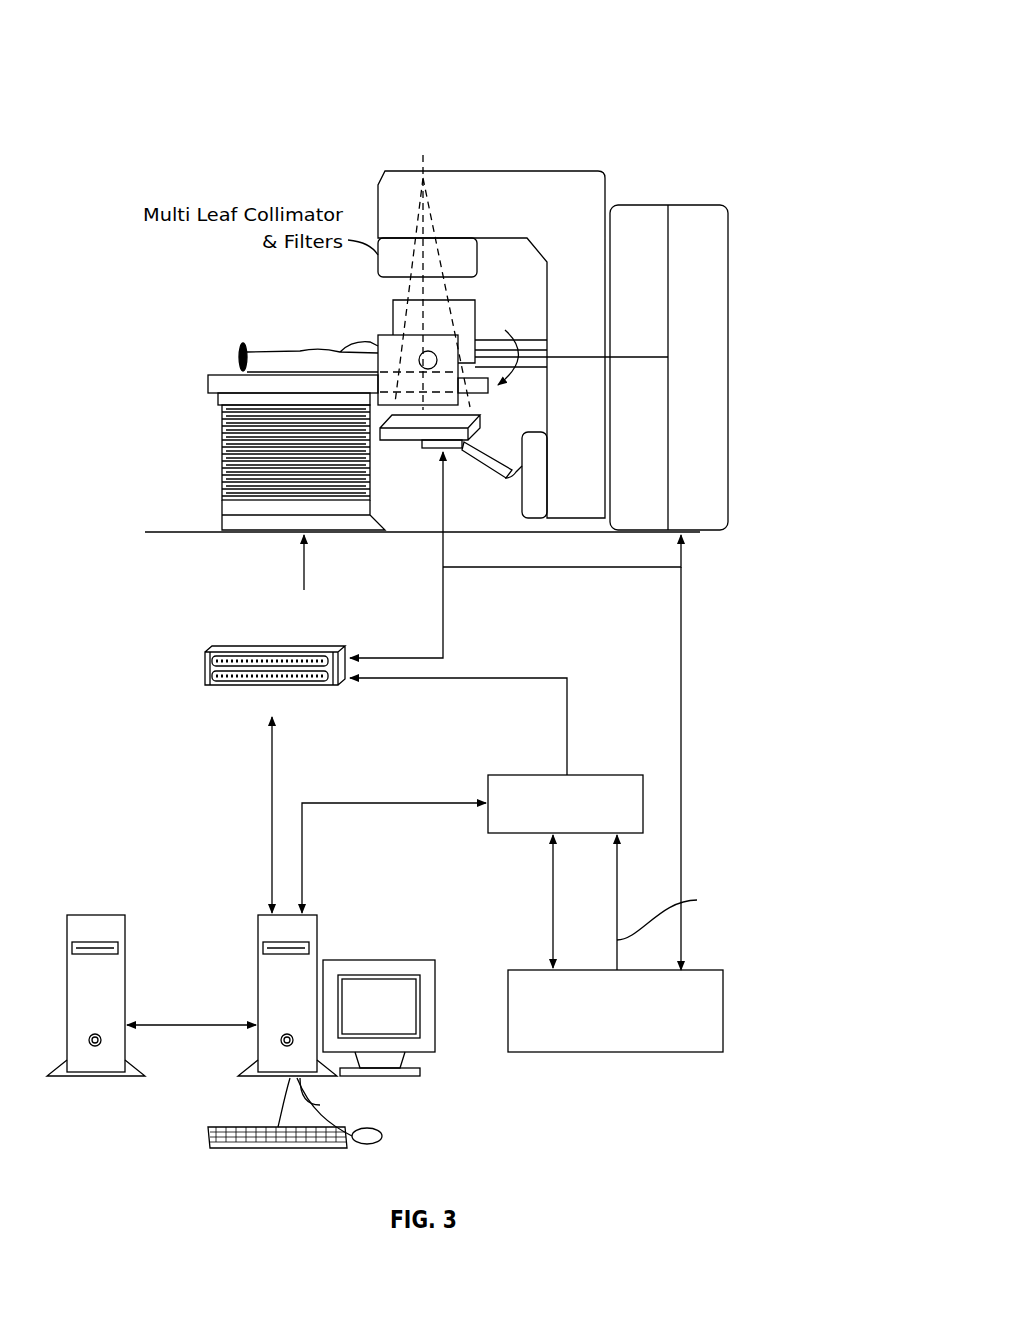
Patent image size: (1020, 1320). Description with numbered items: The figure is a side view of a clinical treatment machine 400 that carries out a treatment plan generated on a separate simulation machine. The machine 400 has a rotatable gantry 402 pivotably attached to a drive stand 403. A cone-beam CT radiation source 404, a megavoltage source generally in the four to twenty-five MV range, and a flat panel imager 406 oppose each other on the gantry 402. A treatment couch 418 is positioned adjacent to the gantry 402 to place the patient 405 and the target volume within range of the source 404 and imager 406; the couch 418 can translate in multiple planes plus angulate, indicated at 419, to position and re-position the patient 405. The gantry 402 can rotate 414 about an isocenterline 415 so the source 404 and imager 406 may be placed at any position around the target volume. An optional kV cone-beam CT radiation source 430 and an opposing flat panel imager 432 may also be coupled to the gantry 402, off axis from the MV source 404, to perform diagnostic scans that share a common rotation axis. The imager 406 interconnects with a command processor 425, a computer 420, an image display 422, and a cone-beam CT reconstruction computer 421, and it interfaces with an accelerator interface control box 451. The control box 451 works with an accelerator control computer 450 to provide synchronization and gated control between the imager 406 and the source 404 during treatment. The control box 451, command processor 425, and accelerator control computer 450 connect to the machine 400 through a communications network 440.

The clinical treatment machine 400 is at (203, 104).
The rotatable gantry 402 is at (600, 175).
The drive stand 403 is at (712, 205).
The cone-beam CT radiation source 404 is at (518, 188).
The patient 405 is at (272, 338).
The flat panel imager 406 is at (413, 448).
The rotation 414 is at (498, 328).
The isocenterline 415 is at (590, 358).
The treatment couch 418 is at (175, 337).
The couch translation and angulation 419 is at (222, 415).
The computer 420 is at (258, 940).
The cone-beam CT reconstruction computer 421 is at (96, 915).
The image display 422 is at (380, 960).
The command processor 425 is at (243, 650).
The kV cone-beam CT radiation source 430 is at (378, 340).
The flat panel imager 432 is at (393, 305).
The communications network 440 is at (447, 578).
The accelerator control computer 450 is at (723, 1010).
The accelerator interface control box 451 is at (603, 774).